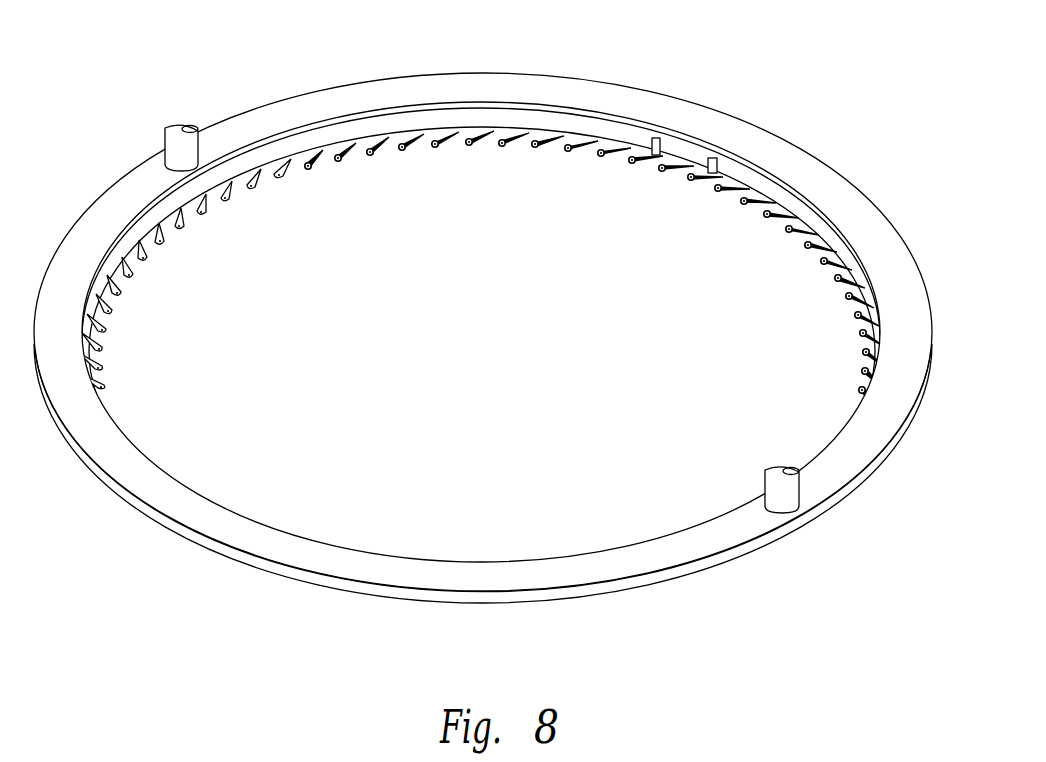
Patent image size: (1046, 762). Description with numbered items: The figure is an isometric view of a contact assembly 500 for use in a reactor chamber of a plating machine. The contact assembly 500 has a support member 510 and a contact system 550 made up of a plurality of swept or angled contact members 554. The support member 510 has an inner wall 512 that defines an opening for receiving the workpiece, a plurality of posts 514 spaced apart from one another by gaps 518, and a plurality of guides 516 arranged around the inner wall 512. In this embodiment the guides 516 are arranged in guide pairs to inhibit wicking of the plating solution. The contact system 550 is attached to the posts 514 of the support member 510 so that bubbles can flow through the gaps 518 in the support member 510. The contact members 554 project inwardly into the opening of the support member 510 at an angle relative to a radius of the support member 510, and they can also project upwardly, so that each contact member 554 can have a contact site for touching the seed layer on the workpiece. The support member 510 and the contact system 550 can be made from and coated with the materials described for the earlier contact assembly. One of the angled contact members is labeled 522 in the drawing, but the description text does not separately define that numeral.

The contact assembly 500 is at (484, 305).
The support member 510 is at (484, 317).
The inner wall 512 is at (802, 210).
The posts 514 is at (405, 151).
The guides 516 is at (712, 158).
The gaps 518 is at (474, 147).
The blade 522 is at (250, 192).
The contact system 550 is at (482, 303).
The contact members 554 is at (748, 208).